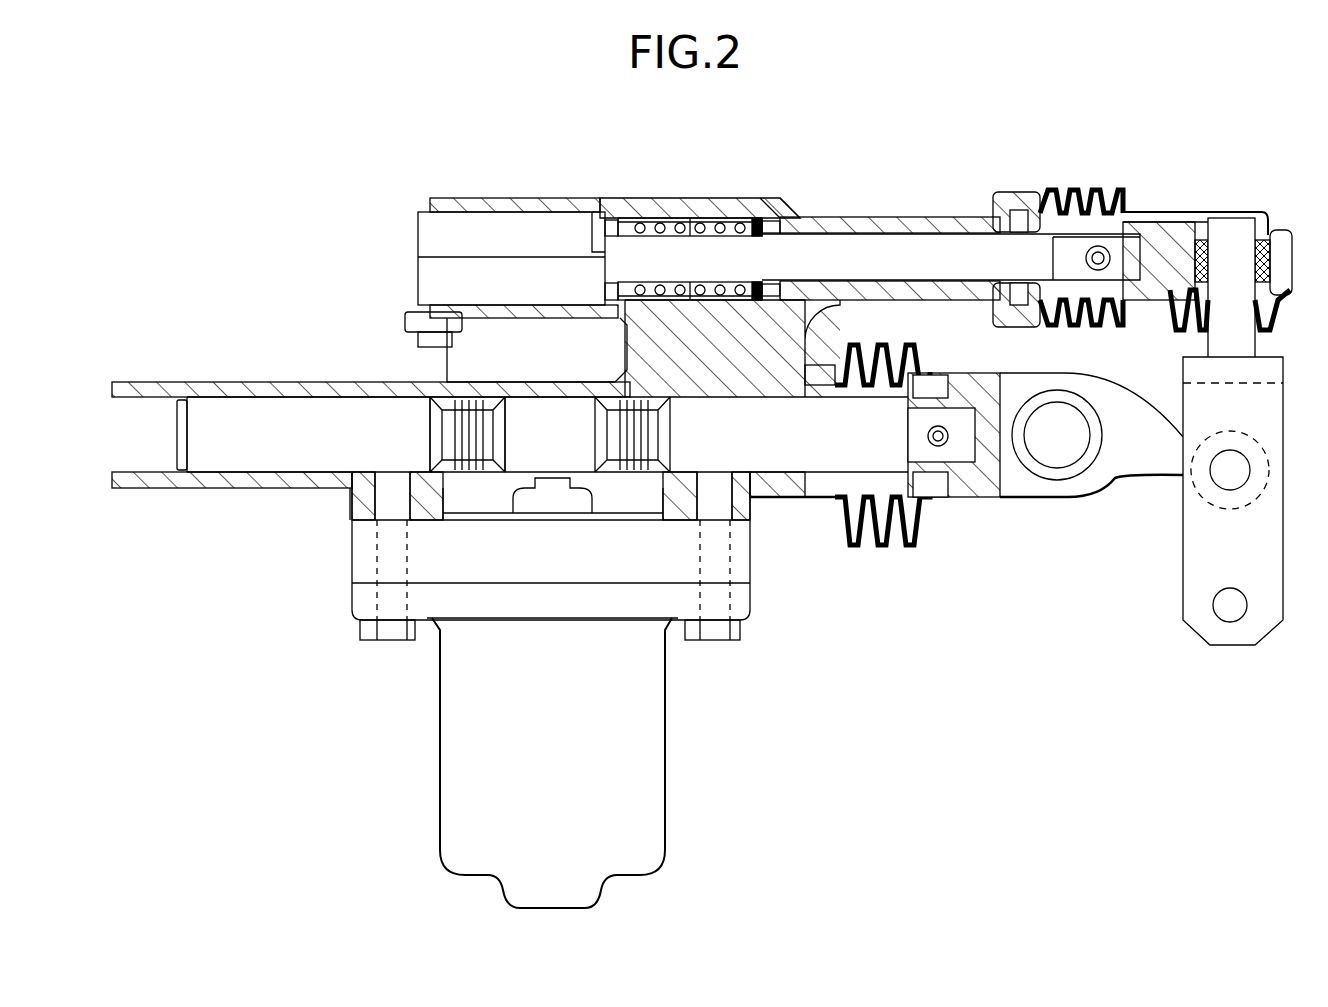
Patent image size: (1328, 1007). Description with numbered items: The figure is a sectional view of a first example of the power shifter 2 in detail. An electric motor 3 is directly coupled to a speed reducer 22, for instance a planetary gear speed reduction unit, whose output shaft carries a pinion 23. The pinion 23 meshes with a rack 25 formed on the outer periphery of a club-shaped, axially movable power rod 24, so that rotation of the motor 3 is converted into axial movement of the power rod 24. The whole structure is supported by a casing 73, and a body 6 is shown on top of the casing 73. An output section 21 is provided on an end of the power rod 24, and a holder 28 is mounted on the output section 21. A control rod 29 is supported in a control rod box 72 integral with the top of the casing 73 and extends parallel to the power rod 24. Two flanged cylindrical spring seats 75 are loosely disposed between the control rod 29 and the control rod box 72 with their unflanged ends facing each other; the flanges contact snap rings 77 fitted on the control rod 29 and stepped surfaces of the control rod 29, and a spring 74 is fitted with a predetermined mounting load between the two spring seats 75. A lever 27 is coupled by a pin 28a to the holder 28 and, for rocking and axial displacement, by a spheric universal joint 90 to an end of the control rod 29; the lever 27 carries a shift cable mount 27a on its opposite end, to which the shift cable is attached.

The power shifter 2 is at (719, 190).
The electric motor 3 is at (640, 750).
The sensor body 6 is at (483, 215).
The output section 21 is at (1057, 455).
The speed reducer 22 is at (620, 573).
The pinion 23 is at (532, 418).
The power rod 24 is at (232, 460).
The rack 25 is at (452, 383).
The lever 27 is at (1204, 535).
The shift cable mount 27a is at (1225, 610).
The holder 28 is at (1112, 470).
The pin 28a is at (1223, 468).
The control rod 29 is at (873, 255).
The control rod box 72 is at (783, 200).
The casing 73 is at (172, 382).
The spring 74 is at (742, 220).
The spring seats 75 is at (640, 222).
The snap rings 77 is at (606, 290).
The spheric universal joint 90 is at (1268, 232).